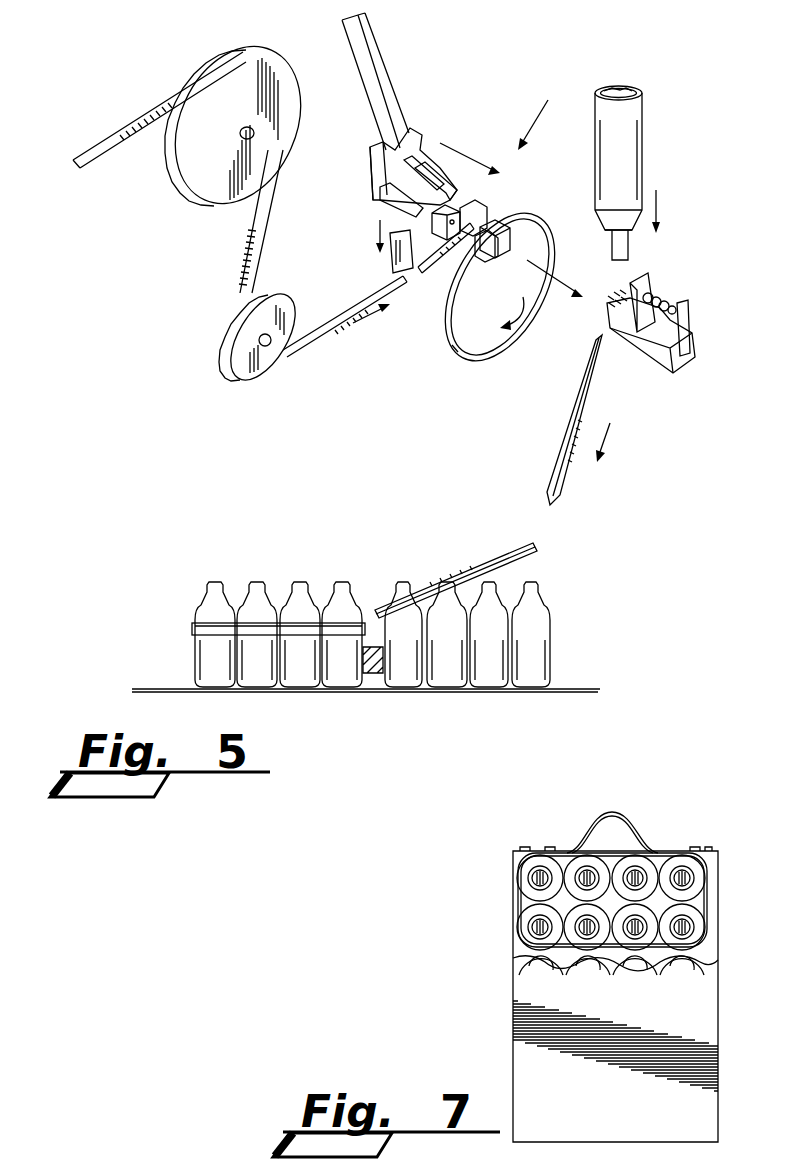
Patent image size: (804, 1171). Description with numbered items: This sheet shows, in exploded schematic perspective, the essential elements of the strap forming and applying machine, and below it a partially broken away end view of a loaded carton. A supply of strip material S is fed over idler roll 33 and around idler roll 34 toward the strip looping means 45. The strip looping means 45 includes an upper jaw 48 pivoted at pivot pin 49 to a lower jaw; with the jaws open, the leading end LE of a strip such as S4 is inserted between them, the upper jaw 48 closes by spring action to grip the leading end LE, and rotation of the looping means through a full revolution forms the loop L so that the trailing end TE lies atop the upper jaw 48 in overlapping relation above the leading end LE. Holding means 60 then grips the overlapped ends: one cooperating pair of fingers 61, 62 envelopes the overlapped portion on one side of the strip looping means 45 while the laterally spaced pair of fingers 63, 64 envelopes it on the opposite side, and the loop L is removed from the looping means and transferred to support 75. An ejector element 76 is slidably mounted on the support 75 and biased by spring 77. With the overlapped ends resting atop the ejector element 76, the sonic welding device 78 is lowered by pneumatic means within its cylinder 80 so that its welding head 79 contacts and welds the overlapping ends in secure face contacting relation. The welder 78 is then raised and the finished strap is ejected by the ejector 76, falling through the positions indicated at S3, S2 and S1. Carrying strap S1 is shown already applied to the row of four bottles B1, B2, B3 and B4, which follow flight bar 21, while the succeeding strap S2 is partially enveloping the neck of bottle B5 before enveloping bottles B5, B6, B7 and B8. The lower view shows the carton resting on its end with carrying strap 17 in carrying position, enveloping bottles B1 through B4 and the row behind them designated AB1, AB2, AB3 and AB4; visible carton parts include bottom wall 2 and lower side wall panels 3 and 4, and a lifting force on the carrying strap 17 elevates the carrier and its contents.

In FIG. 5, the idler roll 33 is at (280, 72).
In FIG. 5, the idler roll 34 is at (246, 358).
In FIG. 5, the strip material S is at (258, 241).
In FIG. 5, the holding means 60 is at (418, 110).
In FIG. 5, the finger 61 is at (432, 176).
In FIG. 5, the finger 62 is at (455, 196).
In FIG. 5, the finger 63 is at (395, 205).
In FIG. 5, the finger 64 is at (395, 208).
In FIG. 5, the strip looping means 45 is at (541, 110).
In FIG. 5, the upper jaw 48 is at (470, 233).
In FIG. 5, the pivot pin 49 is at (463, 215).
In FIG. 5, the trailing end TE is at (435, 268).
In FIG. 5, the leading end LE is at (483, 250).
In FIG. 5, the loop L is at (526, 347).
In FIG. 5, the strip S4 is at (453, 350).
In FIG. 5, the strap position S3 is at (570, 438).
In FIG. 5, the carrying strap S2 is at (538, 549).
In FIG. 5, the carrying strap S1 is at (205, 627).
In FIG. 5, the sonic welding device 78 is at (628, 136).
In FIG. 5, the cylinder 80 is at (632, 92).
In FIG. 5, the welding head 79 is at (614, 251).
In FIG. 5, the support 75 is at (690, 326).
In FIG. 5, the ejector element 76 is at (648, 278).
In FIG. 5, the spring 77 is at (667, 300).
In FIG. 5, the flight bar 21 is at (372, 680).
In FIG. 5, the bottle B1 is at (205, 671).
In FIG. 7, the bottle B1 is at (694, 867).
In FIG. 5, the bottle B2 is at (247, 671).
In FIG. 7, the bottle B2 is at (646, 862).
In FIG. 5, the bottle B3 is at (290, 671).
In FIG. 7, the bottle B3 is at (572, 865).
In FIG. 5, the bottle B4 is at (332, 671).
In FIG. 7, the bottle B4 is at (525, 866).
In FIG. 5, the bottle B5 is at (393, 671).
In FIG. 5, the bottle B6 is at (437, 671).
In FIG. 5, the bottle B7 is at (479, 671).
In FIG. 5, the bottle B8 is at (521, 671).
In FIG. 7, the bottle AB1 is at (700, 928).
In FIG. 7, the bottle AB2 is at (708, 903).
In FIG. 7, the bottle AB3 is at (580, 909).
In FIG. 7, the bottle AB4 is at (528, 931).
In FIG. 7, the carrying strap 17 is at (627, 815).
In FIG. 7, the lower side wall panel 4 is at (718, 1011).
In FIG. 7, the lower side wall panel 3 is at (513, 1043).
In FIG. 7, the bottom wall 2 is at (584, 1089).